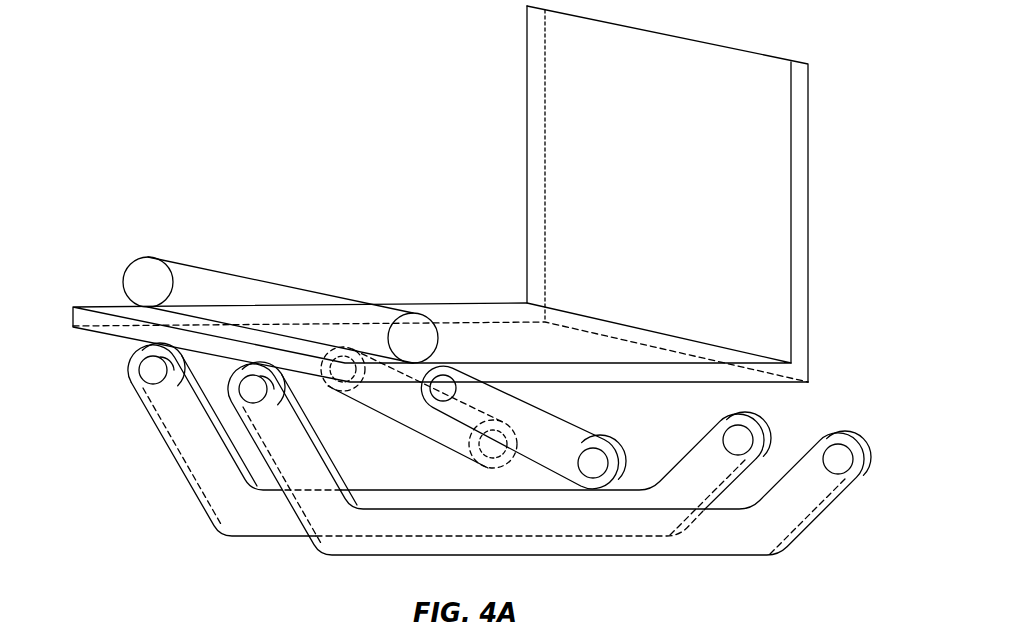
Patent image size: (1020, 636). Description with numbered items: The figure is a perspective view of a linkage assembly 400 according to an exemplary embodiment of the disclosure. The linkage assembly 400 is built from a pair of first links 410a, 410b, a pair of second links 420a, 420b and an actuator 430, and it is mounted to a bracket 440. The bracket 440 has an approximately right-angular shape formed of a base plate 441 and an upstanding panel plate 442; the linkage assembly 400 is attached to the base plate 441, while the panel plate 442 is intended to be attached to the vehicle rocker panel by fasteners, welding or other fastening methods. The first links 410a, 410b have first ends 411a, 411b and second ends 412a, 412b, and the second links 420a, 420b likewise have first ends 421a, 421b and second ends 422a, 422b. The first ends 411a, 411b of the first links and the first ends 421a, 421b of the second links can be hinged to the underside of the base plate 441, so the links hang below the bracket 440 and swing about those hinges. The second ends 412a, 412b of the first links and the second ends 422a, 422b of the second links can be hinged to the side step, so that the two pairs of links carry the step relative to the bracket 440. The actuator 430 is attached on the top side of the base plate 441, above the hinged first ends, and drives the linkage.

The linkage assembly 400 is at (272, 71).
The bracket 440 is at (748, 53).
The panel plate 442 is at (527, 88).
The base plate 441 is at (440, 303).
The actuator 430 is at (188, 264).
The first link 410a is at (334, 556).
The first link 410b is at (208, 516).
The first end of the first link 411a is at (233, 405).
The first end of the first link 411b is at (137, 380).
The second end of the first link 412a is at (827, 432).
The second end of the first link 412b is at (757, 424).
The second link 420a is at (566, 421).
The second link 420b is at (408, 408).
The first end of the second link 421a is at (449, 366).
The first end of the second link 421b is at (332, 390).
The second end of the second link 422a is at (621, 452).
The second end of the second link 422b is at (490, 466).